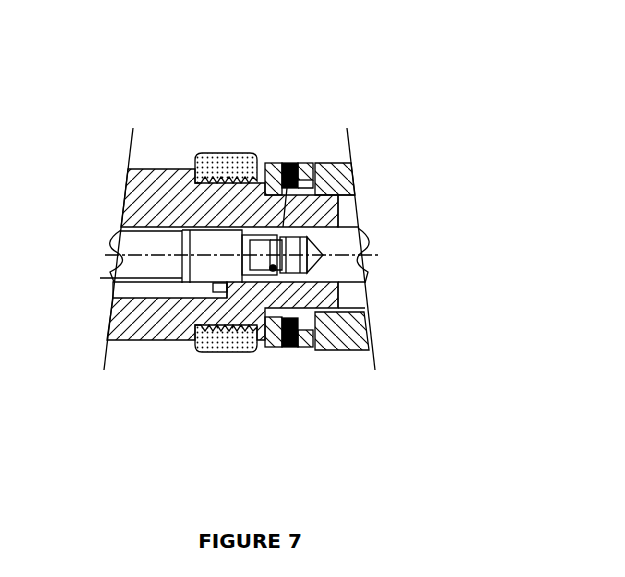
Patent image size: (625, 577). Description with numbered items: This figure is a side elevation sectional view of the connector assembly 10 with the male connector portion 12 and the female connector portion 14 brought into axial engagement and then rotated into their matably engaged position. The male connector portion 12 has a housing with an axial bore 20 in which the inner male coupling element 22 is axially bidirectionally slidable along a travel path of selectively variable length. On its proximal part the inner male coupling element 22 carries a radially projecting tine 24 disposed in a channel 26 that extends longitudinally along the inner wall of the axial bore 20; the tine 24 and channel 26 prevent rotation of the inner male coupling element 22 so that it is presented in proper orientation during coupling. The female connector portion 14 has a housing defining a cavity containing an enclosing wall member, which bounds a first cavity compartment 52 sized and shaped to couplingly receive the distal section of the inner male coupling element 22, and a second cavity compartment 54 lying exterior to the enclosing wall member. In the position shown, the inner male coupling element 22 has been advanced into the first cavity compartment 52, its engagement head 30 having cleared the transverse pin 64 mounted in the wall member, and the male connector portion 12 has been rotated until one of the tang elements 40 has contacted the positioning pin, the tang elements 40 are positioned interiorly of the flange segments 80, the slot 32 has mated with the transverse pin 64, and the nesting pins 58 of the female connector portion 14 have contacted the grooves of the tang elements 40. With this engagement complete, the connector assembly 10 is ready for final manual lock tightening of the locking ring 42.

The connector assembly 10 is at (220, 97).
The male connector portion 12 is at (118, 182).
The female connector portion 14 is at (359, 188).
The axial bore 20 is at (118, 238).
The inner male coupling element 22 is at (203, 262).
The radially projecting tine 24 is at (190, 302).
The channel 26 is at (175, 287).
The engagement head 30 is at (290, 262).
The slot 32 is at (292, 163).
The tang element 40 is at (315, 165).
The locking ring 42 is at (212, 156).
The first cavity compartment 52 is at (313, 247).
The second cavity compartment 54 is at (347, 205).
The nesting pin 58 is at (283, 340).
The transverse pin 64 is at (273, 271).
The flange segment 80 is at (263, 163).